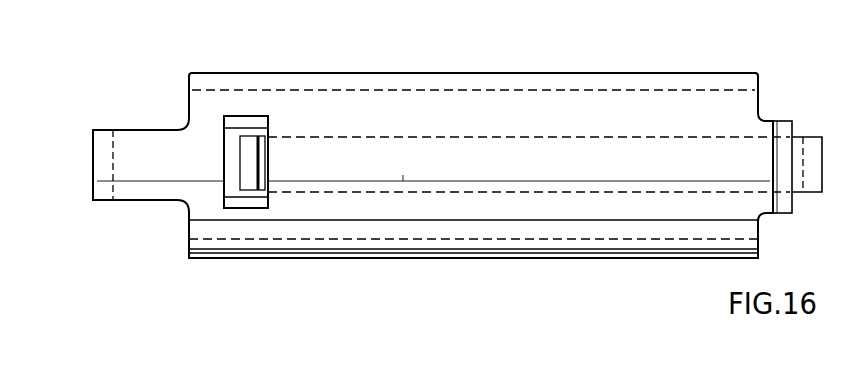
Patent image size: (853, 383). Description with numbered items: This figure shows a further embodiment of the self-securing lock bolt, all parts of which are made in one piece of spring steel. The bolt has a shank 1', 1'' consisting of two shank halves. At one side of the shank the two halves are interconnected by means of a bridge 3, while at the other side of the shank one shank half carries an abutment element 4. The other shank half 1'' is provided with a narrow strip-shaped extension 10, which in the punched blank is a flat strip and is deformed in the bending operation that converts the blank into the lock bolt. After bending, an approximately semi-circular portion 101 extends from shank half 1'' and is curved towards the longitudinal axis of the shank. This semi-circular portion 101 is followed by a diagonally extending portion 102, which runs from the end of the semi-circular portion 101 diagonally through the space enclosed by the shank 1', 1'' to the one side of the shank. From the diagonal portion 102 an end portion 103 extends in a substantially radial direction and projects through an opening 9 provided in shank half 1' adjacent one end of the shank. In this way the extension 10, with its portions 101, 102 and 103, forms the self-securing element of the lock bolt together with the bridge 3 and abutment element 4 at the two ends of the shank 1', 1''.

The shank half 1' is at (433, 138).
The shank half 1'' is at (473, 272).
The bridge 3 is at (137, 141).
The abutment element 4 is at (783, 130).
The opening 9 is at (224, 186).
The strip-shaped extension 10 is at (481, 118).
The semi-circular portion 101 is at (813, 182).
The diagonally extending portion 102 is at (403, 175).
The end portion 103 is at (252, 150).